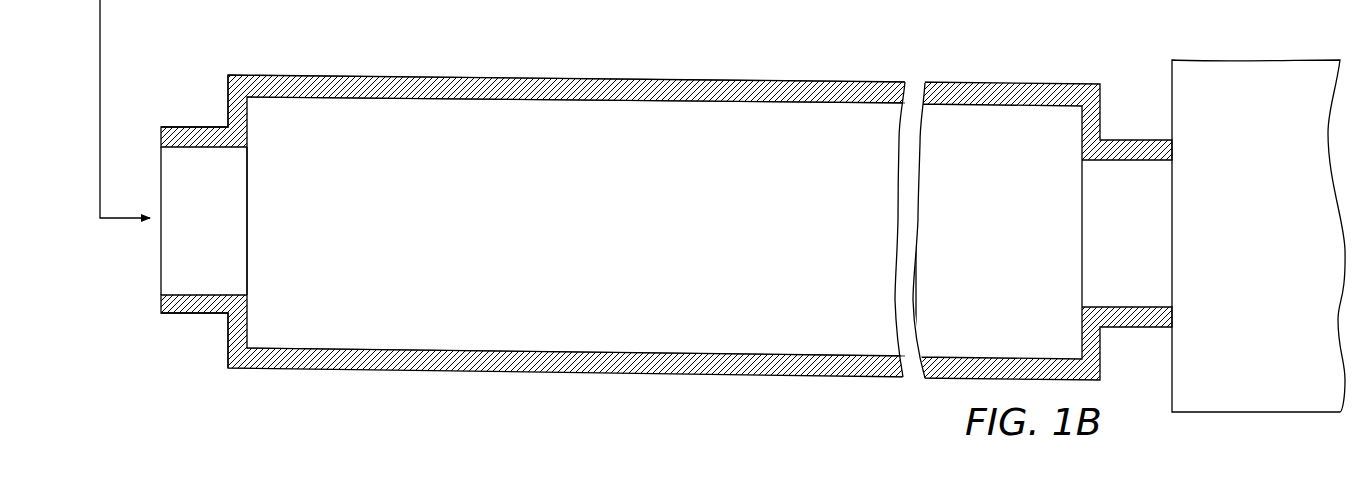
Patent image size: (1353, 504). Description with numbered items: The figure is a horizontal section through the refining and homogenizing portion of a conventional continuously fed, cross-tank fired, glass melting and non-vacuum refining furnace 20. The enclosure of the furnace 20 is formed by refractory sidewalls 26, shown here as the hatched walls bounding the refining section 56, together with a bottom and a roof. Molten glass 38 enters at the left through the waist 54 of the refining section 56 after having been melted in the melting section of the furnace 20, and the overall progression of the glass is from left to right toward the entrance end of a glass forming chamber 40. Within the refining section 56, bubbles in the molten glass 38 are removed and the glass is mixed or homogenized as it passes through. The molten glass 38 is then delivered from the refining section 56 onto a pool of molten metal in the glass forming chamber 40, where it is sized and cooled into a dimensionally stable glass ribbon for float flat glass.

The glass melting furnace 20 is at (827, 73).
The sidewalls 26 is at (628, 78).
The molten glass 38 is at (763, 330).
The glass forming chamber 40 is at (1237, 412).
The waist 54 is at (188, 127).
The refining section 56 is at (467, 71).